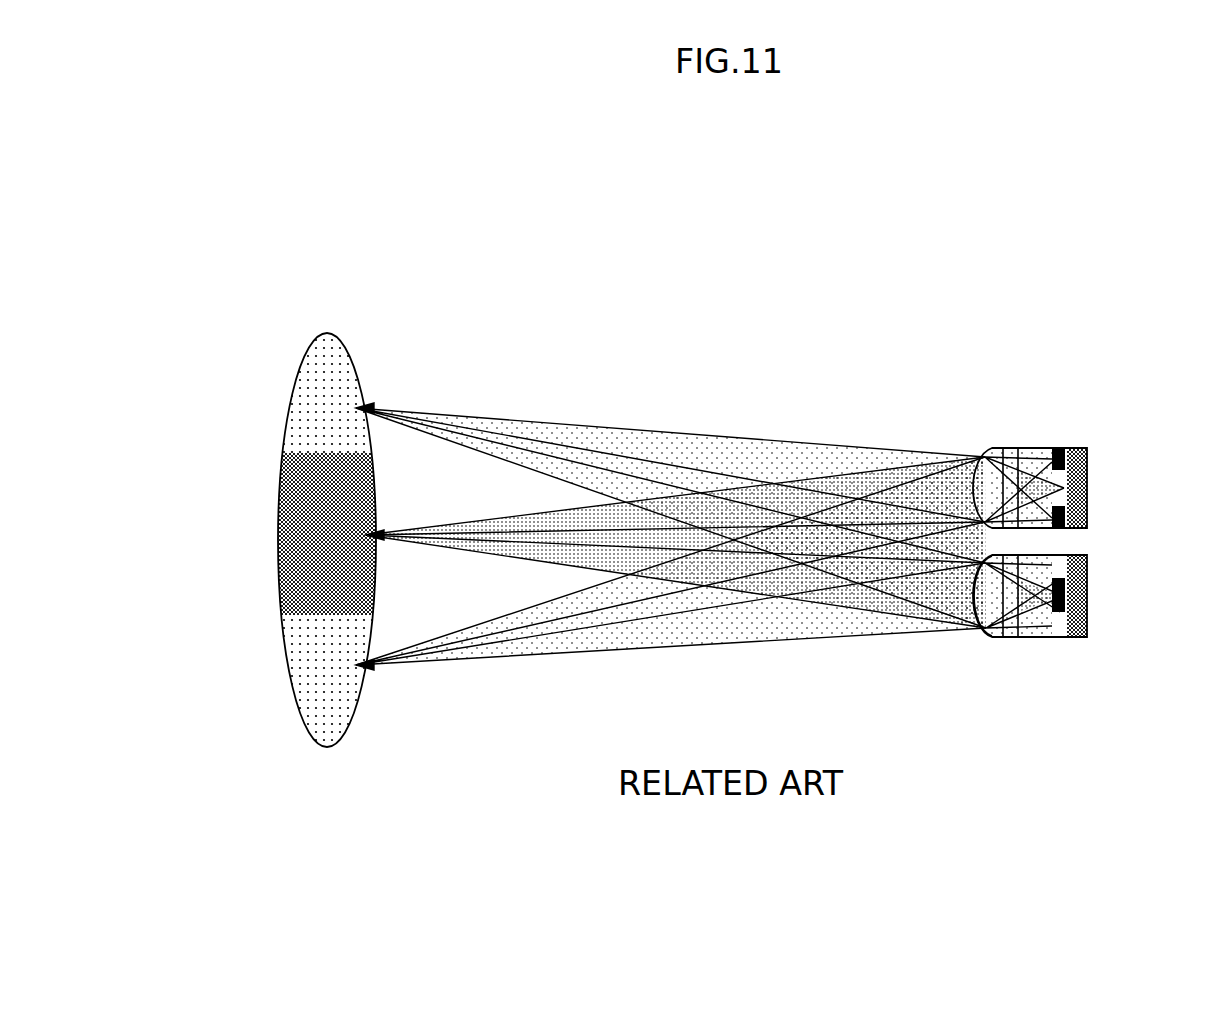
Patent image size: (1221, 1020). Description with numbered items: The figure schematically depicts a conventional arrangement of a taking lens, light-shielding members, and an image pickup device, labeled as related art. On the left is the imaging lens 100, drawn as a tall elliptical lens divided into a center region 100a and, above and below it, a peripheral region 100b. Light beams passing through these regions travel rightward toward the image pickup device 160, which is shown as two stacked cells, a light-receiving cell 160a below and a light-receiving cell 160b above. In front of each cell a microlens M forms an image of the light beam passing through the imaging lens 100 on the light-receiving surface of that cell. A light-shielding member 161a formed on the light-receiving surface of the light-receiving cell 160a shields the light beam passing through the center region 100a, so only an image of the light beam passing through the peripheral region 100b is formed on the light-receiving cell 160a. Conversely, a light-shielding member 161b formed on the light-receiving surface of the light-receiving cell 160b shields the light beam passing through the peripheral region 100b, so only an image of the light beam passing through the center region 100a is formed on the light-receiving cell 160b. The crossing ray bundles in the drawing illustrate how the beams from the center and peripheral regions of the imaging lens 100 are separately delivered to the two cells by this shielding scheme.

The imaging lens 100 is at (296, 515).
The center region 100a is at (279, 536).
The peripheral region 100b is at (293, 400).
The image pickup device 160 is at (1072, 528).
The light-receiving cell 160a is at (1072, 617).
The light-receiving cell 160b is at (1079, 472).
The light-shielding member 161a is at (1058, 613).
The light-shielding member 161b is at (1087, 461).
The microlens M is at (985, 632).